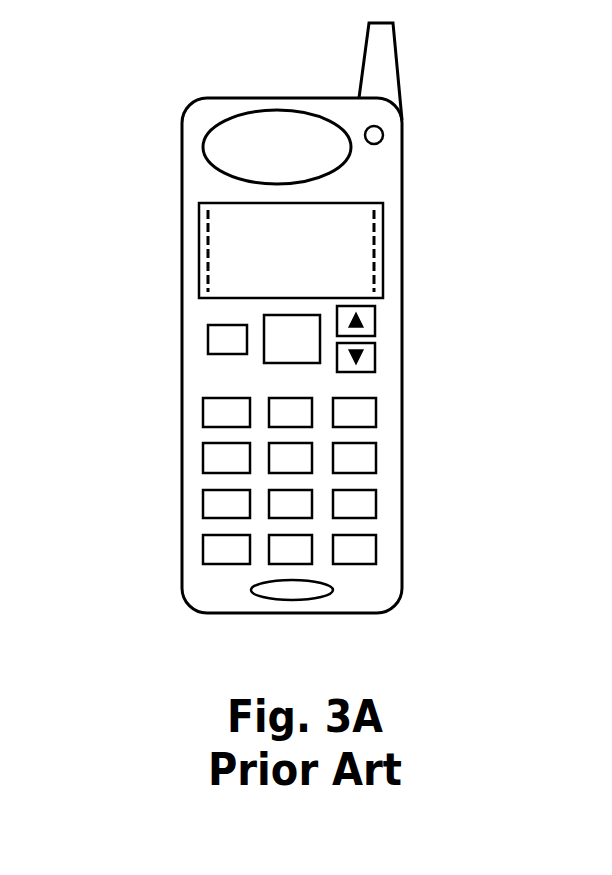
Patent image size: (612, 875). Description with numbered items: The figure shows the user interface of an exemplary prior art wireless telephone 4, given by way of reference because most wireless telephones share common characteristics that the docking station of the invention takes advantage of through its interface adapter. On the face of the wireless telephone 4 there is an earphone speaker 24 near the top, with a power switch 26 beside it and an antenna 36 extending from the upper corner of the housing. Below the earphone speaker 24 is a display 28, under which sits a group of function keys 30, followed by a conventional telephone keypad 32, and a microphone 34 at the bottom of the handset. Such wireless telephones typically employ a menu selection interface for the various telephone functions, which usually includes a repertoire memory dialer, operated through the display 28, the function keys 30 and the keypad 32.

The wireless telephone 4 is at (403, 407).
The antenna 36 is at (398, 58).
The earphone speaker 24 is at (207, 136).
The power switch 26 is at (383, 131).
The display 28 is at (199, 265).
The group of function keys 30 is at (194, 362).
The telephone keypad 32 is at (200, 568).
The microphone 34 is at (252, 586).